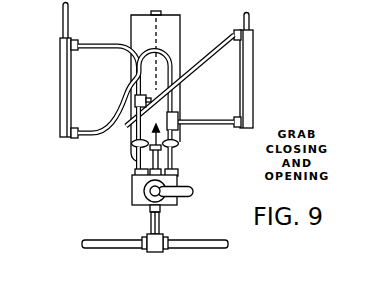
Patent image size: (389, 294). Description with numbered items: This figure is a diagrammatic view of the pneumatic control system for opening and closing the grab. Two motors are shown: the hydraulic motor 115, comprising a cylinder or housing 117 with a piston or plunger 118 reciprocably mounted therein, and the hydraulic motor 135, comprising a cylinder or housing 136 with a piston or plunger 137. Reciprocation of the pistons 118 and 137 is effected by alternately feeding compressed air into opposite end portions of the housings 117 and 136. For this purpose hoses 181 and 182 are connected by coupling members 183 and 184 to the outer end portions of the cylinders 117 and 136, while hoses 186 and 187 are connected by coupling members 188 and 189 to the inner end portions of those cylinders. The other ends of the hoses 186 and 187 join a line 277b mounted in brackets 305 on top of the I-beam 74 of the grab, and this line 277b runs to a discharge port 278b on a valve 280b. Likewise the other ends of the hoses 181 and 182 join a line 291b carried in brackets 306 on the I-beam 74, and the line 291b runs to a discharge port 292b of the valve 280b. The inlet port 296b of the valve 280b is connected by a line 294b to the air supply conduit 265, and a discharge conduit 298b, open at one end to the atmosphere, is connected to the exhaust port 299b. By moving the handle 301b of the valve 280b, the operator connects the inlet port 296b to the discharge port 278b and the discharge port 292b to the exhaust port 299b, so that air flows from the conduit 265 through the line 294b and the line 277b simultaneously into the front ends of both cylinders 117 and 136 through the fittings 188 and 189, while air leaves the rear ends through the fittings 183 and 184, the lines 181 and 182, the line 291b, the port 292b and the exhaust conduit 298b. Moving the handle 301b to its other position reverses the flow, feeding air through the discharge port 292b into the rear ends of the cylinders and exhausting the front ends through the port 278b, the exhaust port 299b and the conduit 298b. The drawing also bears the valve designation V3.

The I-beam 74 is at (170, 37).
The hydraulic motor 115 is at (58, 105).
The cylinder or housing 117 is at (60, 73).
The piston or plunger 118 is at (63, 22).
The hydraulic motor 135 is at (258, 61).
The cylinder or housing 136 is at (255, 42).
The piston or plunger 137 is at (249, 22).
The hose 181 is at (96, 126).
The hose 182 is at (192, 120).
The coupling member 183 is at (76, 139).
The coupling member 184 is at (236, 117).
The hose 186 is at (110, 42).
The hose 187 is at (200, 54).
The coupling member 188 is at (77, 49).
The coupling member 189 is at (233, 40).
The conduit 265 is at (208, 250).
The line 277b is at (140, 161).
The discharge port 278b is at (133, 180).
The valve 280b is at (132, 200).
The line 291b is at (176, 133).
The discharge port 292b is at (180, 177).
The line 294b is at (150, 230).
The inlet port 296b is at (160, 208).
The discharge conduit 298b is at (131, 167).
The discharge port 299b is at (172, 162).
The handle 301b is at (190, 190).
The brackets 305 is at (133, 135).
The brackets 306 is at (176, 143).
The control valve V3 is at (188, 201).